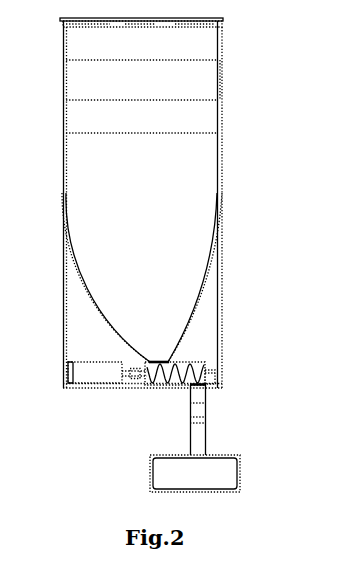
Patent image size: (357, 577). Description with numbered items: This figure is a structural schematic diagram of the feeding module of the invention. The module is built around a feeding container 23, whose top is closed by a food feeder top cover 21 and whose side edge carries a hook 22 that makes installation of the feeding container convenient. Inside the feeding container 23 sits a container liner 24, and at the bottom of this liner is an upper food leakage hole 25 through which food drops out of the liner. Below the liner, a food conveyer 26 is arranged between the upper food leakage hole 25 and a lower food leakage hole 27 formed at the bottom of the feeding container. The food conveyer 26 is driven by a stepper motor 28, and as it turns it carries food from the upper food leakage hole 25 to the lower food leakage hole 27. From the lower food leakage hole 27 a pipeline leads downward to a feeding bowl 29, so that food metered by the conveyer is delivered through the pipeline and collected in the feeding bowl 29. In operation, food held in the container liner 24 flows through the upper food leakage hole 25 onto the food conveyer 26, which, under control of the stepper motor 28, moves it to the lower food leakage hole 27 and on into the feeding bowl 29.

The food feeder top cover 21 is at (207, 29).
The hook 22 is at (223, 85).
The feeding container 23 is at (222, 168).
The container liner 24 is at (195, 275).
The upper food leakage hole 25 is at (170, 360).
The food conveyer 26 is at (215, 383).
The lower food leakage hole 27 is at (202, 397).
The stepper motor 28 is at (95, 372).
The feeding bowl 29 is at (168, 473).